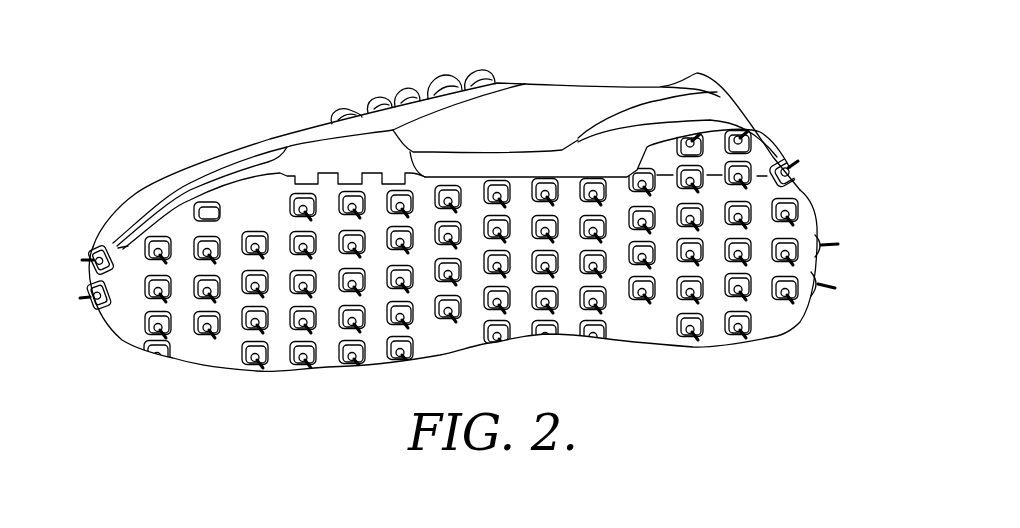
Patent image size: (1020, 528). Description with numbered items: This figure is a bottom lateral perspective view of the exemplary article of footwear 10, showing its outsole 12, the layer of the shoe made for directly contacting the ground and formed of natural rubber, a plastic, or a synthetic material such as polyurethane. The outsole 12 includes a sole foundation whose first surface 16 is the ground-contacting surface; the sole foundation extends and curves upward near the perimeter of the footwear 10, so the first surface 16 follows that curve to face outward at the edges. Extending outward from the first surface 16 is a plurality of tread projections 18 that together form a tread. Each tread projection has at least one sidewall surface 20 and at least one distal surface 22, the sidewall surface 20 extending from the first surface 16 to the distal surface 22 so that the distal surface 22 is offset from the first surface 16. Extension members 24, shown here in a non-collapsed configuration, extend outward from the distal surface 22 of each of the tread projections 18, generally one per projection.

The article of footwear 10 is at (236, 58).
The outsole 12 is at (848, 170).
The first surface 16 is at (130, 333).
The tread projections 18 is at (192, 379).
The sidewall surface 20 is at (258, 196).
The distal surface 22 is at (210, 208).
The extension members 24 is at (457, 348).